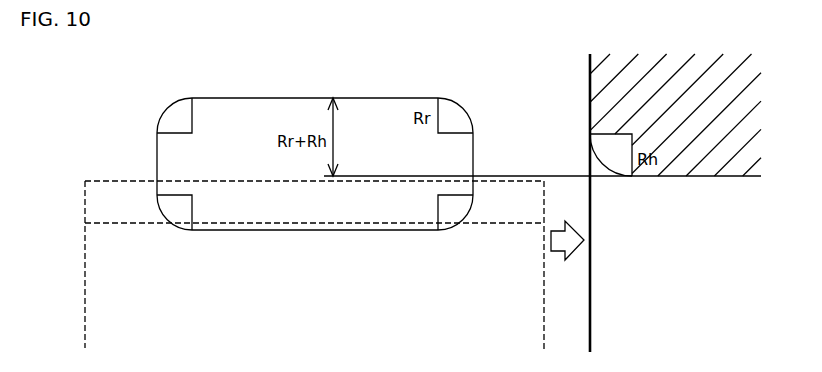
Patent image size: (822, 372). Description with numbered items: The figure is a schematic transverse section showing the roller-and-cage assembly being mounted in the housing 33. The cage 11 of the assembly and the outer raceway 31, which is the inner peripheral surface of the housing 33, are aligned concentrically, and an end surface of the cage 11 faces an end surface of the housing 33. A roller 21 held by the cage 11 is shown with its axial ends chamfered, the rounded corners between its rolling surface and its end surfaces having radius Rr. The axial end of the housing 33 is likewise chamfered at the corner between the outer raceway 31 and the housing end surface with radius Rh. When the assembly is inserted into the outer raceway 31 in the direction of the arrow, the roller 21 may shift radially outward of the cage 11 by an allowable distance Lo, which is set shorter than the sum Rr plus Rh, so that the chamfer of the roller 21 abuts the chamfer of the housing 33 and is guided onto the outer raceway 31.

The cage 11 is at (110, 187).
The roller 21 is at (231, 108).
The outer raceway 31 is at (730, 178).
The housing 33 is at (607, 80).